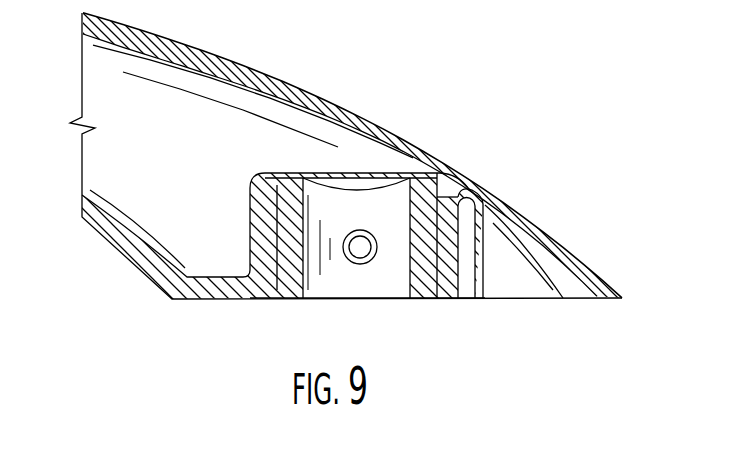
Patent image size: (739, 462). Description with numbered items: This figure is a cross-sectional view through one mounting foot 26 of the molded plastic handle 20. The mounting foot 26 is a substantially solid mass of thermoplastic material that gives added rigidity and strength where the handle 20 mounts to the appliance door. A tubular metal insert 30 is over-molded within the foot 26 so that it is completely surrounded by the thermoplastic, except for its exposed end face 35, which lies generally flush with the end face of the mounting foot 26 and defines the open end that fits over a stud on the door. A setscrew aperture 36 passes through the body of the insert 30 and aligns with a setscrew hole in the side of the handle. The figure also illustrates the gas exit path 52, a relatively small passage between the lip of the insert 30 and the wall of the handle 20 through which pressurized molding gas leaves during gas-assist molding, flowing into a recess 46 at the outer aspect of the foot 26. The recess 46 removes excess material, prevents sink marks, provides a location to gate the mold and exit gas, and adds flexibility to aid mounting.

The handle 20 is at (401, 91).
The mounting foot 26 is at (281, 81).
The tubular metal insert 30 is at (388, 287).
The exposed end face 35 is at (393, 300).
The setscrew aperture 36 is at (355, 249).
The recess 46 is at (521, 276).
The gas exit path 52 is at (458, 179).